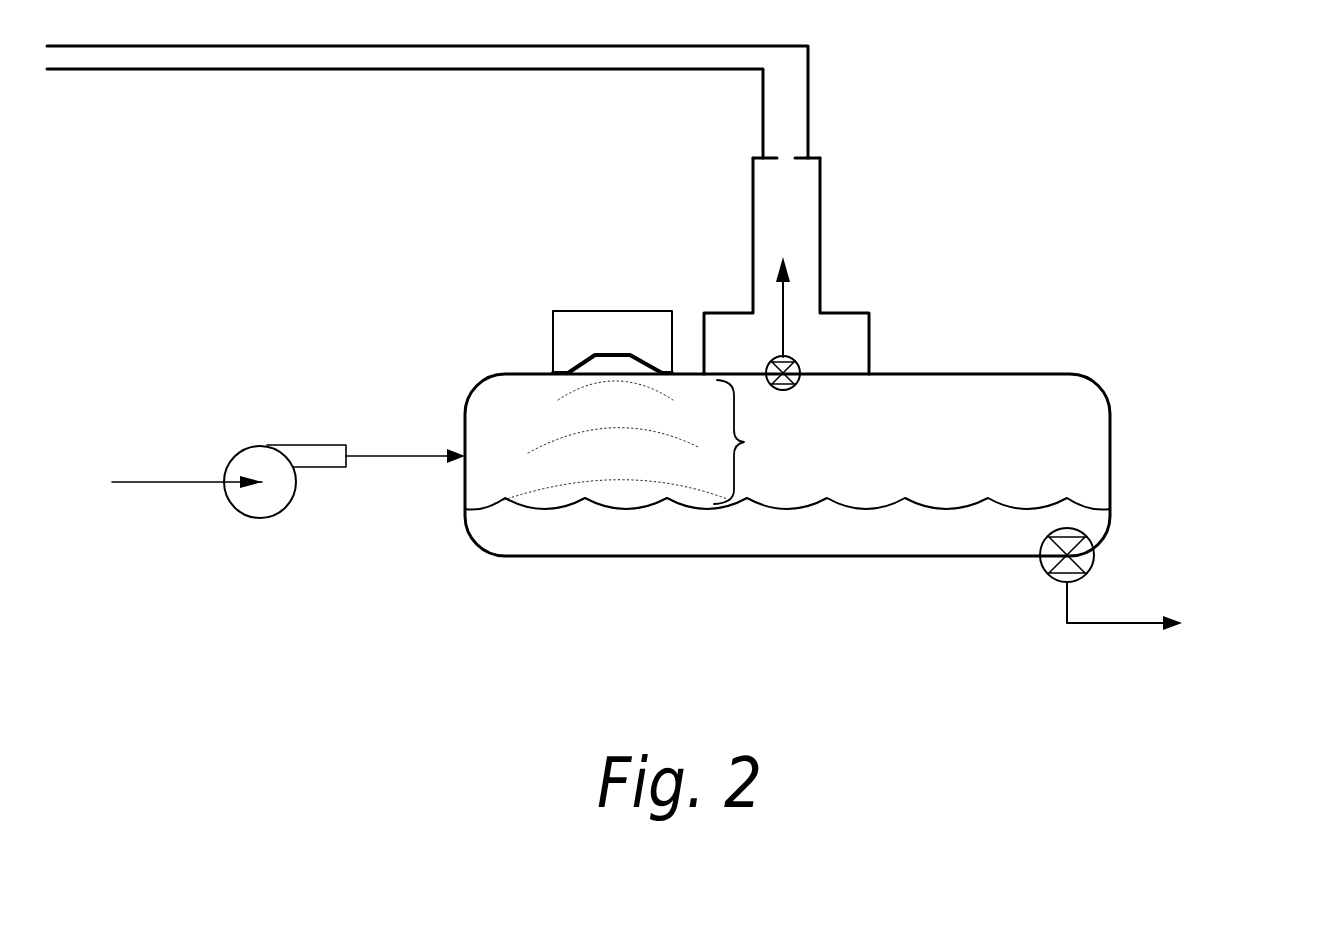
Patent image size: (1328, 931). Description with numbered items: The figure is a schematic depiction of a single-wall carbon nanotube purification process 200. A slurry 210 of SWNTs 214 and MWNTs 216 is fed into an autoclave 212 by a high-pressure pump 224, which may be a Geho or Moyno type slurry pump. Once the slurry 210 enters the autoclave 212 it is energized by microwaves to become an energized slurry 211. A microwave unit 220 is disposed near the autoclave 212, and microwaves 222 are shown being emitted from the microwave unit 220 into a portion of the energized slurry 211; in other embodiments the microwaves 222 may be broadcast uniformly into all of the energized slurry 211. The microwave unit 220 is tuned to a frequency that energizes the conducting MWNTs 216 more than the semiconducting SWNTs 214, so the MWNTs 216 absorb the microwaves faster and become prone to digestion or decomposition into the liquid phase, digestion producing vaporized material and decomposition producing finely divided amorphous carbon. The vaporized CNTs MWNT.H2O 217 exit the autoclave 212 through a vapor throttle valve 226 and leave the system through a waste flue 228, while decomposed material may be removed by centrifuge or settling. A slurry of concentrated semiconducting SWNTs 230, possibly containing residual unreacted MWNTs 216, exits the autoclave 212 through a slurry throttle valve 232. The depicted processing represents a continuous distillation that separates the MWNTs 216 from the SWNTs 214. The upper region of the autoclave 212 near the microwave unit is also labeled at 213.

The single-wall carbon nanotube purification process 200 is at (827, 88).
The slurry 210 is at (162, 482).
The energized slurry 211 is at (473, 537).
The autoclave 212 is at (463, 412).
The upper vapor region of tank 213 is at (498, 399).
The SWNTs 214 is at (760, 540).
The MWNTs 216 is at (543, 535).
The vaporized CNTs MWNT.H2O 217 is at (1073, 437).
The microwave unit 220 is at (583, 313).
The microwaves 222 is at (647, 442).
The high-pressure pump 224 is at (265, 447).
The vapor throttle valve 226 is at (797, 363).
The waste flue 228 is at (808, 114).
The slurry of concentrated semiconducting SWNTs 230 is at (1117, 624).
The slurry throttle valve 232 is at (1092, 557).